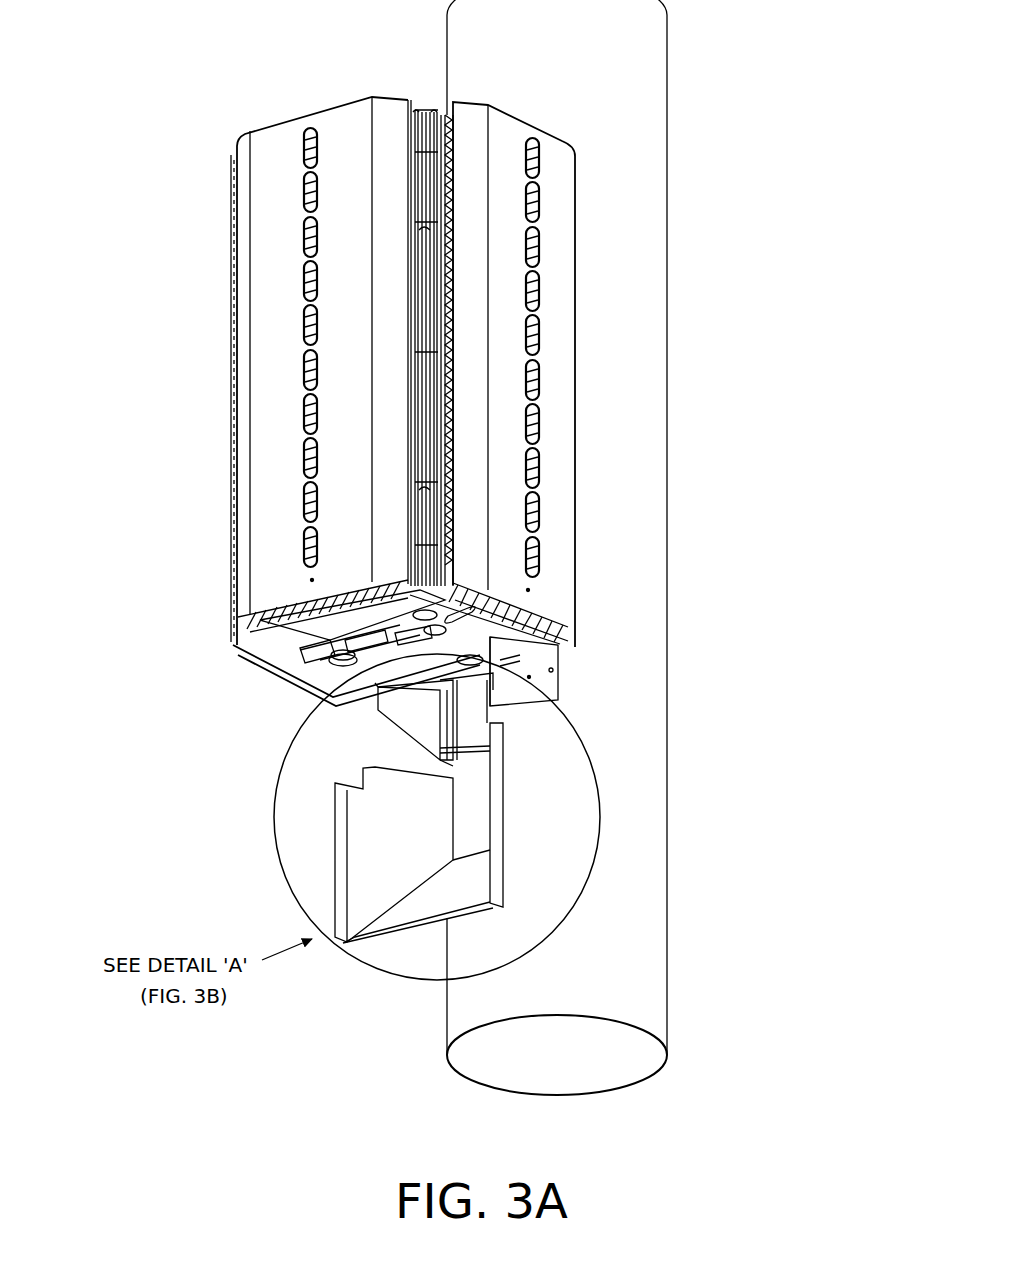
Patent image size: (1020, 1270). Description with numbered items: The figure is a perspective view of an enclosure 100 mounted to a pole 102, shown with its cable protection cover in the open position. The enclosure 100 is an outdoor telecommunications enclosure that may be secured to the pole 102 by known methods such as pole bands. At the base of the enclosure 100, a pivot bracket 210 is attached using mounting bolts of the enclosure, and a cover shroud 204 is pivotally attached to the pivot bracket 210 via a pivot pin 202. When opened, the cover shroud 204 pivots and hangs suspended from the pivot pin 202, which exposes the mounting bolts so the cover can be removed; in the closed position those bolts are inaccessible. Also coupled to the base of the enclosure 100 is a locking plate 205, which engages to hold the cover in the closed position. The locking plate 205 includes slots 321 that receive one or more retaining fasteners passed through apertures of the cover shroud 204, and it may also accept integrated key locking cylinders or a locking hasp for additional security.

The enclosure 100 is at (310, 86).
The pole 102 is at (667, 107).
The pivot pin 202 is at (470, 758).
The cover shroud 204 is at (520, 843).
The locking plate 205 is at (345, 598).
The pivot bracket 210 is at (505, 705).
The slots 321 is at (340, 698).